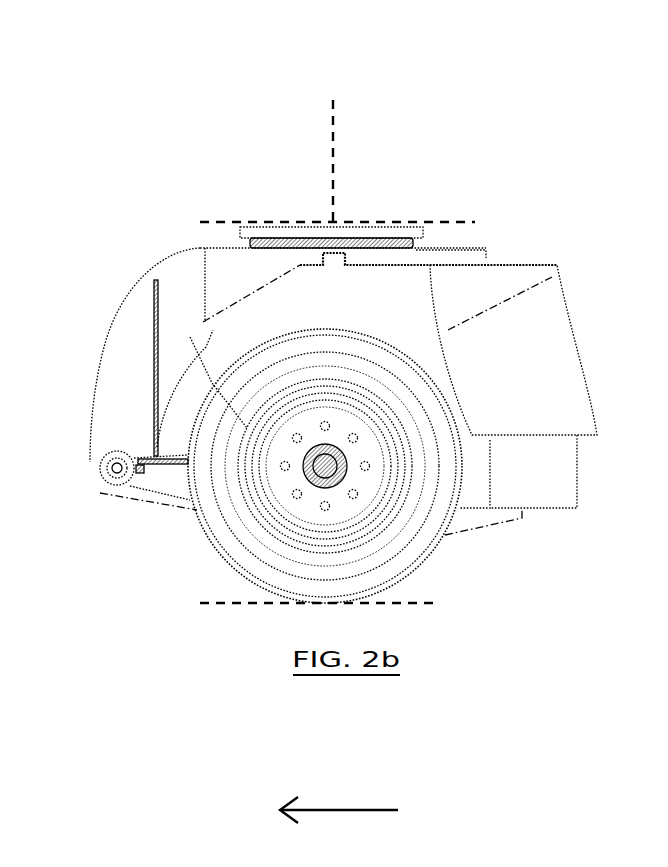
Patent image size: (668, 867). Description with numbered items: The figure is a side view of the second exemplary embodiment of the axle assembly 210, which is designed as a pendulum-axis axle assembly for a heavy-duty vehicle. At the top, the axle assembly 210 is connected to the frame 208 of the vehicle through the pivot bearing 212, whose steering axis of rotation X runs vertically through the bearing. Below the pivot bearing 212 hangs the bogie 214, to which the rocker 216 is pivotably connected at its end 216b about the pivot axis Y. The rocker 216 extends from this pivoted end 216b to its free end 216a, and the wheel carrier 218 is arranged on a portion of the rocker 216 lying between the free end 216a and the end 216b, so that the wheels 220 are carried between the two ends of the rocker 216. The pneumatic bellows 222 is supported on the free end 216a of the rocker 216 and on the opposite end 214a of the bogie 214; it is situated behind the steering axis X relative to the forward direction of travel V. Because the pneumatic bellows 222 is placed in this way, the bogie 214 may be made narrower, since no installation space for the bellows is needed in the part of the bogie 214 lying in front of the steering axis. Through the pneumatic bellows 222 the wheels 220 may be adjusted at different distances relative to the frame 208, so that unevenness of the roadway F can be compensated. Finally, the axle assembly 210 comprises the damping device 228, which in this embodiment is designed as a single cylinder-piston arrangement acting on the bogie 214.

The frame 208 is at (432, 221).
The axle assembly 210 is at (192, 100).
The pivot bearing 212 is at (263, 232).
The bogie 214 is at (173, 277).
The end of the bogie 214a is at (477, 257).
The rocker 216 is at (160, 492).
The free end of the rocker 216a is at (520, 518).
The end of the rocker pivotably connected to the bogie 216b is at (102, 458).
The wheel carrier 218 is at (358, 467).
The wheels 220 is at (407, 565).
The pneumatic bellows 222 is at (557, 337).
The damping device 228 is at (185, 368).